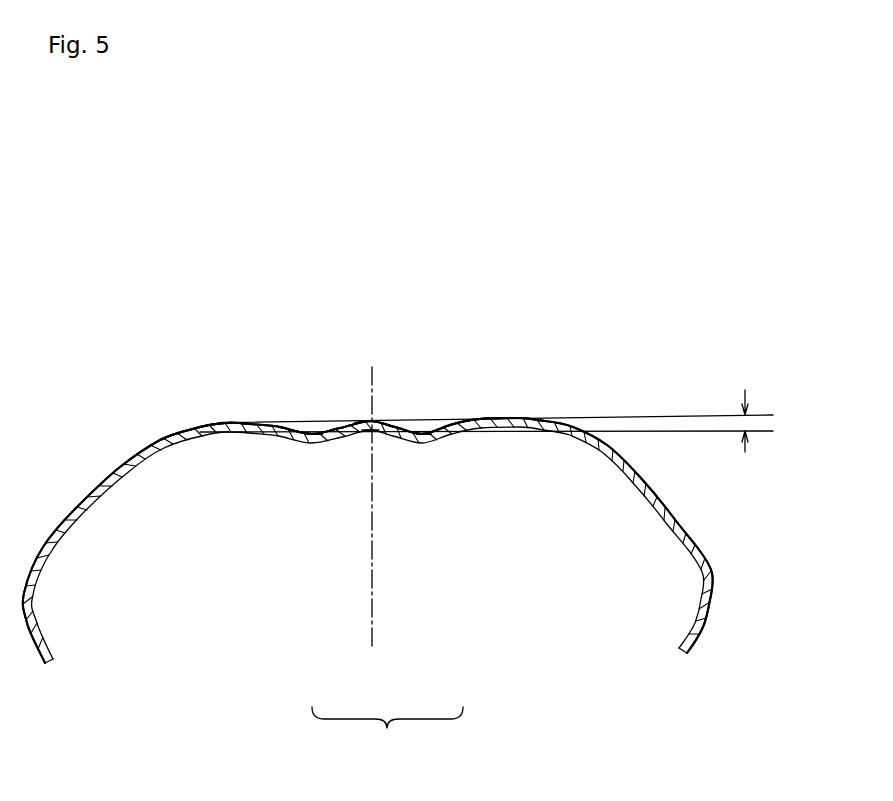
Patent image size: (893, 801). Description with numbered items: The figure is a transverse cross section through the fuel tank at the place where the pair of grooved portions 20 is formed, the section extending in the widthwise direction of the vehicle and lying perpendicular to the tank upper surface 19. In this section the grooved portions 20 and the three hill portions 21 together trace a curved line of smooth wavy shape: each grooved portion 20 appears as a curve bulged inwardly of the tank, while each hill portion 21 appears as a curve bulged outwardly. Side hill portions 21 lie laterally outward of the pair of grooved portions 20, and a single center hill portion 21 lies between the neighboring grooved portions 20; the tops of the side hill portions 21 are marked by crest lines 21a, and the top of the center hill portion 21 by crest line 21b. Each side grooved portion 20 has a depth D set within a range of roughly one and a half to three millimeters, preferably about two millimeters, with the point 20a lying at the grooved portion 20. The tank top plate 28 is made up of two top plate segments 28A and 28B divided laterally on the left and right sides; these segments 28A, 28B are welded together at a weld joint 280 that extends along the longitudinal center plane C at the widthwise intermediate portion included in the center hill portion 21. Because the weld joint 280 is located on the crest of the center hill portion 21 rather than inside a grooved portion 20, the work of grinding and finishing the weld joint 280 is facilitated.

The tank upper surface 19 is at (160, 437).
The hill portion 21 is at (203, 427).
The crest line 21a is at (223, 425).
The crest line 21b is at (370, 423).
The grooved portion 20 is at (289, 433).
The bottom of concave portion 20a is at (320, 437).
The weld joint 280 is at (373, 427).
The top plate segment 28A is at (82, 513).
The top plate segment 28B is at (695, 548).
The tank top plate 28 is at (387, 737).
The longitudinal center plane C is at (373, 549).
The depth D is at (747, 422).